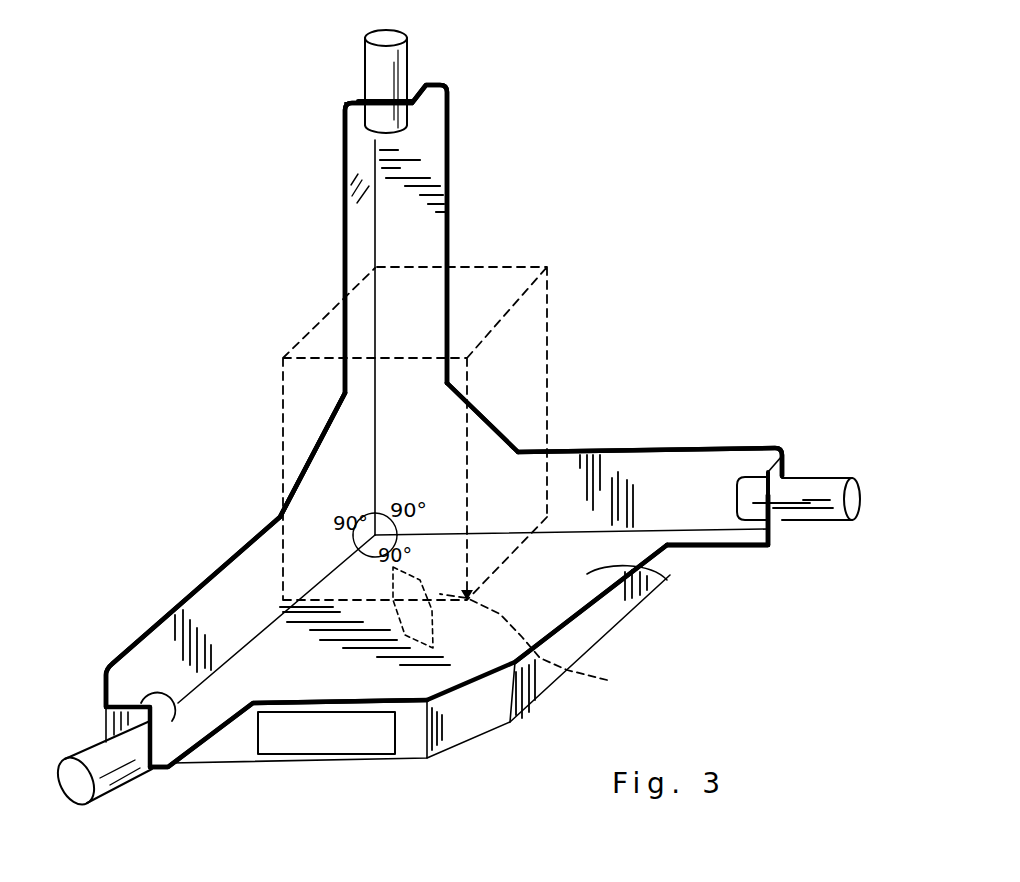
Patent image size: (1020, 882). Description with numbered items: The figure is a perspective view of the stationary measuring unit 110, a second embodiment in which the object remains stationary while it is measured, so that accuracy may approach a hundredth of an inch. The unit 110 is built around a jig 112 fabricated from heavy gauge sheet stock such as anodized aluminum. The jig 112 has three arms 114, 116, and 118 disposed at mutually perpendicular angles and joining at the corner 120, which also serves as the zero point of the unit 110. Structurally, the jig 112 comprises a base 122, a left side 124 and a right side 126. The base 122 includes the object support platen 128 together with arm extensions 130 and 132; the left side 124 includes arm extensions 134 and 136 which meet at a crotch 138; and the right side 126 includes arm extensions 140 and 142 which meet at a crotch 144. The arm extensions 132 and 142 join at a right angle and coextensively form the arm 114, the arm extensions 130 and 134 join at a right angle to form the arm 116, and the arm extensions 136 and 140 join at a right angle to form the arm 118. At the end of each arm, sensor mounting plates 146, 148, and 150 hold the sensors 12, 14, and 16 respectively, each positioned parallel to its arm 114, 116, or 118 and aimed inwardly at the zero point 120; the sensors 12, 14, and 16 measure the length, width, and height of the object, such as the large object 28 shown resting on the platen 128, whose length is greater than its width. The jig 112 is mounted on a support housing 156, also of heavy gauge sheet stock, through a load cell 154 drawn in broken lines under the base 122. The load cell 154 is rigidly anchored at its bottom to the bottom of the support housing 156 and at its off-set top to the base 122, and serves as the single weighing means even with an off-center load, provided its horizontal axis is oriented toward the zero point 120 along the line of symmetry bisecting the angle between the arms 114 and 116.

The sensor 12 is at (830, 500).
The sensor 14 is at (118, 768).
The sensor 16 is at (400, 63).
The large object 28 is at (525, 335).
The stationary measuring unit 110 is at (660, 290).
The jig 112 is at (614, 607).
The arm 114 is at (770, 438).
The arm 116 is at (149, 616).
The arm 118 is at (457, 132).
The corner 120 is at (375, 536).
The base 122 is at (486, 639).
The left side 124 is at (262, 568).
The right side 126 is at (648, 470).
The object support platen 128 is at (667, 580).
The arm extension 130 is at (182, 742).
The arm extension 132 is at (745, 535).
The arm extension 134 is at (150, 670).
The arm extension 136 is at (357, 223).
The crotch 138 is at (327, 447).
The arm extension 140 is at (427, 237).
The arm extension 142 is at (717, 470).
The crotch 144 is at (488, 442).
The sensor mounting plate 146 is at (785, 472).
The sensor mounting plate 148 is at (102, 722).
The sensor mounting plate 150 is at (416, 85).
The load cell 154 is at (541, 643).
The support housing 156 is at (460, 724).